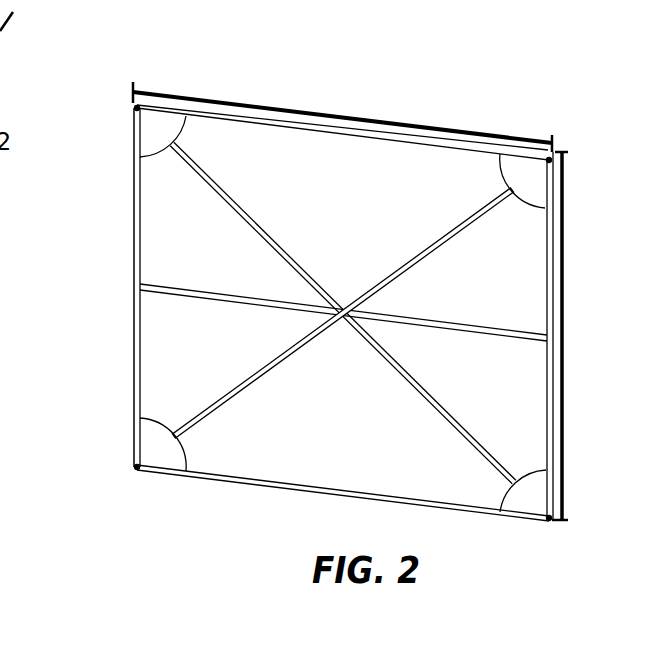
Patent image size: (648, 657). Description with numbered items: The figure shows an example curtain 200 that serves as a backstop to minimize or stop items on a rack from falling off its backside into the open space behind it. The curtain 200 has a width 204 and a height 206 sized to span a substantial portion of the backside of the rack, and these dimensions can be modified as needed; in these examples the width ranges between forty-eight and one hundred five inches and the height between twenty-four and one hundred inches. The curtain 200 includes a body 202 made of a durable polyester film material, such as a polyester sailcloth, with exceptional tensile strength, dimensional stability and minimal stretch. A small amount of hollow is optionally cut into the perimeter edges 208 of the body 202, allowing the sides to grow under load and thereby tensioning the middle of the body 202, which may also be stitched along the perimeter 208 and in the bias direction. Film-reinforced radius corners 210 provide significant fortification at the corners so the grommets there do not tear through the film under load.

The curtain 200 is at (462, 93).
The body 202 is at (152, 233).
The width 204 is at (358, 120).
The height 206 is at (564, 278).
The perimeter edges 208 is at (137, 308).
The film-reinforced radius corners 210 is at (153, 139).